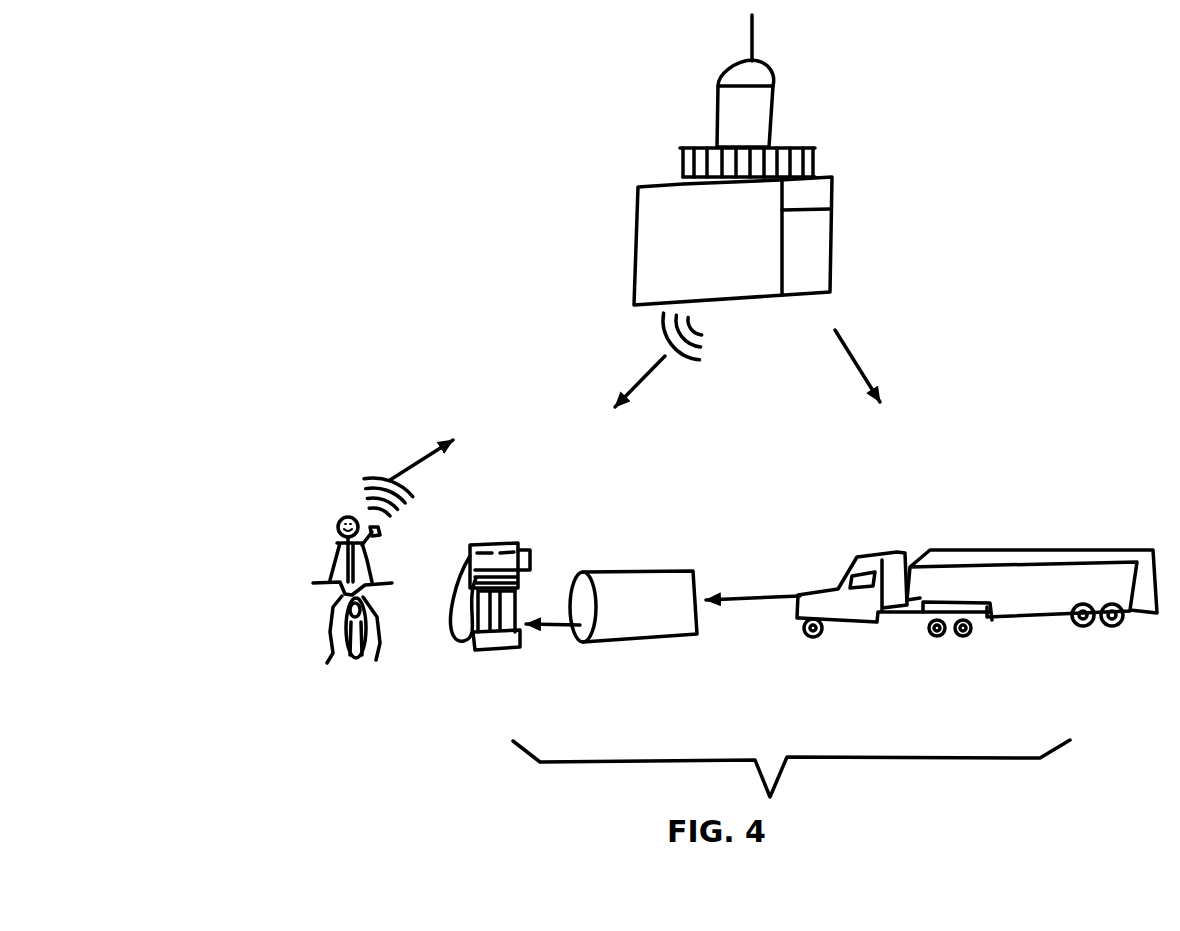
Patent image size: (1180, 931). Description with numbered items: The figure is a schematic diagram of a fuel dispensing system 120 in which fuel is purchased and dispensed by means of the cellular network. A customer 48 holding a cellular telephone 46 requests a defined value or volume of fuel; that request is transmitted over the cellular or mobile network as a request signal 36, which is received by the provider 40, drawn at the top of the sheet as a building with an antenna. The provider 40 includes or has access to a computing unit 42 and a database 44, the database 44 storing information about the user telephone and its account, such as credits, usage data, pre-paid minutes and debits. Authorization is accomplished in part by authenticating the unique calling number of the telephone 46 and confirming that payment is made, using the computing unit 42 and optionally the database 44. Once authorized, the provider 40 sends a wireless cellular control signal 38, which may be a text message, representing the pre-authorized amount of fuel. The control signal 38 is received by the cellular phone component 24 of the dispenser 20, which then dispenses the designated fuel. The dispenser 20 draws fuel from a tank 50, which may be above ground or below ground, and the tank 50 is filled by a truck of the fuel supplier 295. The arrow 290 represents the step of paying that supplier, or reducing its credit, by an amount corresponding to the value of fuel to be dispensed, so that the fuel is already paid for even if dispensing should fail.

The fuel dispensing system 120 is at (284, 113).
The provider 40 is at (719, 160).
The database 44 is at (815, 200).
The computing unit 42 is at (815, 238).
The control signal 38 is at (708, 358).
The step of paying a supplier 290 is at (865, 353).
The request signal 36 is at (384, 465).
The cellular telephone 46 is at (380, 533).
The customer 48 is at (334, 590).
The dispenser 20 is at (509, 563).
The cellular phone component 24 is at (533, 548).
The tank 50 is at (650, 590).
The fuel supplier 295 is at (1048, 578).